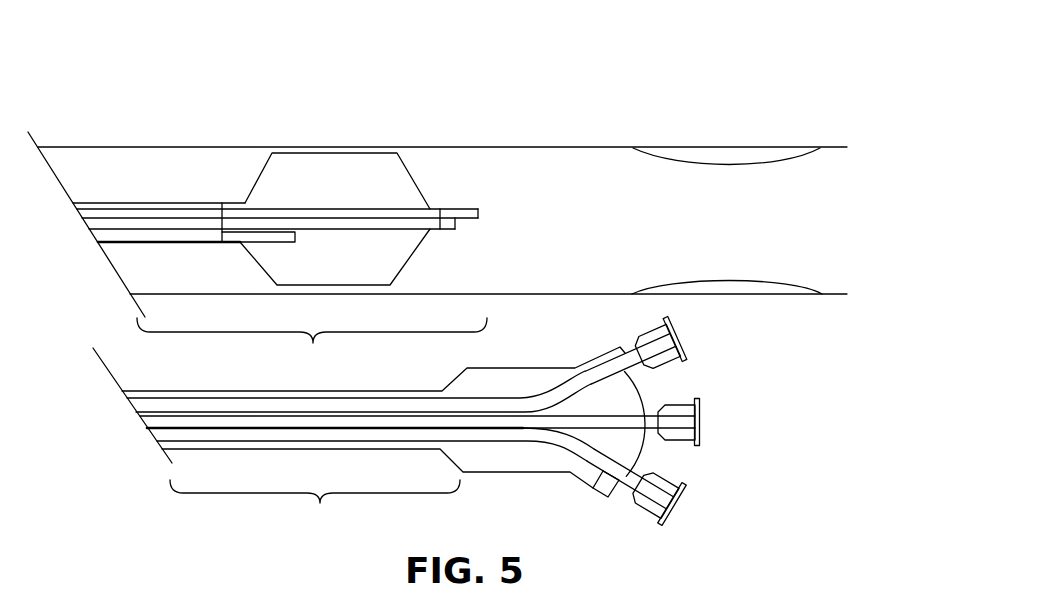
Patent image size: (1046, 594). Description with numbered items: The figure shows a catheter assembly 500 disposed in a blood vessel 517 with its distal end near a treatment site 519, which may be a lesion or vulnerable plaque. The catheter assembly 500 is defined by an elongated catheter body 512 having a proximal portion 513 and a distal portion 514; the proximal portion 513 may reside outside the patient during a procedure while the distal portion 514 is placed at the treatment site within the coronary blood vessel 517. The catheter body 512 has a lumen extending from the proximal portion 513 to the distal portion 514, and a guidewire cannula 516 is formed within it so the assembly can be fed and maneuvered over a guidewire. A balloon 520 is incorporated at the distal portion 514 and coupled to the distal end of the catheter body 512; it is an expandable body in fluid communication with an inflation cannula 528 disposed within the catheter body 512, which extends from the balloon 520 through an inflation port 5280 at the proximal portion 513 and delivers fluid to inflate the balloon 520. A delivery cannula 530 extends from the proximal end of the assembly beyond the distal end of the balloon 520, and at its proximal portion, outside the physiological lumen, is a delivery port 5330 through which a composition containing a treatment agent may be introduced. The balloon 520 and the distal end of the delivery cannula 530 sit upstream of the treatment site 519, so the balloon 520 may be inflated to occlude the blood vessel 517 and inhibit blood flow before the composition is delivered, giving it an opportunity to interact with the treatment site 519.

The catheter assembly 500 is at (621, 111).
The blood vessel 517 is at (490, 147).
The balloon 520 is at (407, 150).
The treatment site 519 is at (749, 174).
The delivery cannula 530 is at (463, 209).
The guidewire cannula 516 is at (452, 231).
The inflation cannula 528 is at (274, 233).
The distal portion 514 is at (312, 344).
The catheter body 512 is at (382, 390).
The proximal portion 513 is at (315, 507).
The delivery port 5330 is at (681, 331).
The inflation port 5280 is at (686, 503).